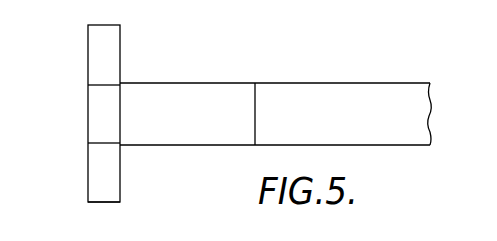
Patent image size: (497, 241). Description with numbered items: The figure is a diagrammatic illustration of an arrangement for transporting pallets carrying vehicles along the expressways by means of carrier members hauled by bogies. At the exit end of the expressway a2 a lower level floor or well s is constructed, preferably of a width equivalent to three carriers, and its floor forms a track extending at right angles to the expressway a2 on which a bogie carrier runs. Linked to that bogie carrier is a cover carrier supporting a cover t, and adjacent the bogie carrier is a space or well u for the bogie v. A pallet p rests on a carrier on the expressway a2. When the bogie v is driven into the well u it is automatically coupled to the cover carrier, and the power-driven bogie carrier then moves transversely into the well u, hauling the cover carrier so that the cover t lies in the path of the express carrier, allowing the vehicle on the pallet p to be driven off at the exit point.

The lower level floor or well s is at (121, 40).
The space or well for the bogie u is at (98, 56).
The bogie v is at (105, 115).
The cover t is at (120, 202).
The pallet p is at (203, 100).
The expressway a2 is at (337, 102).